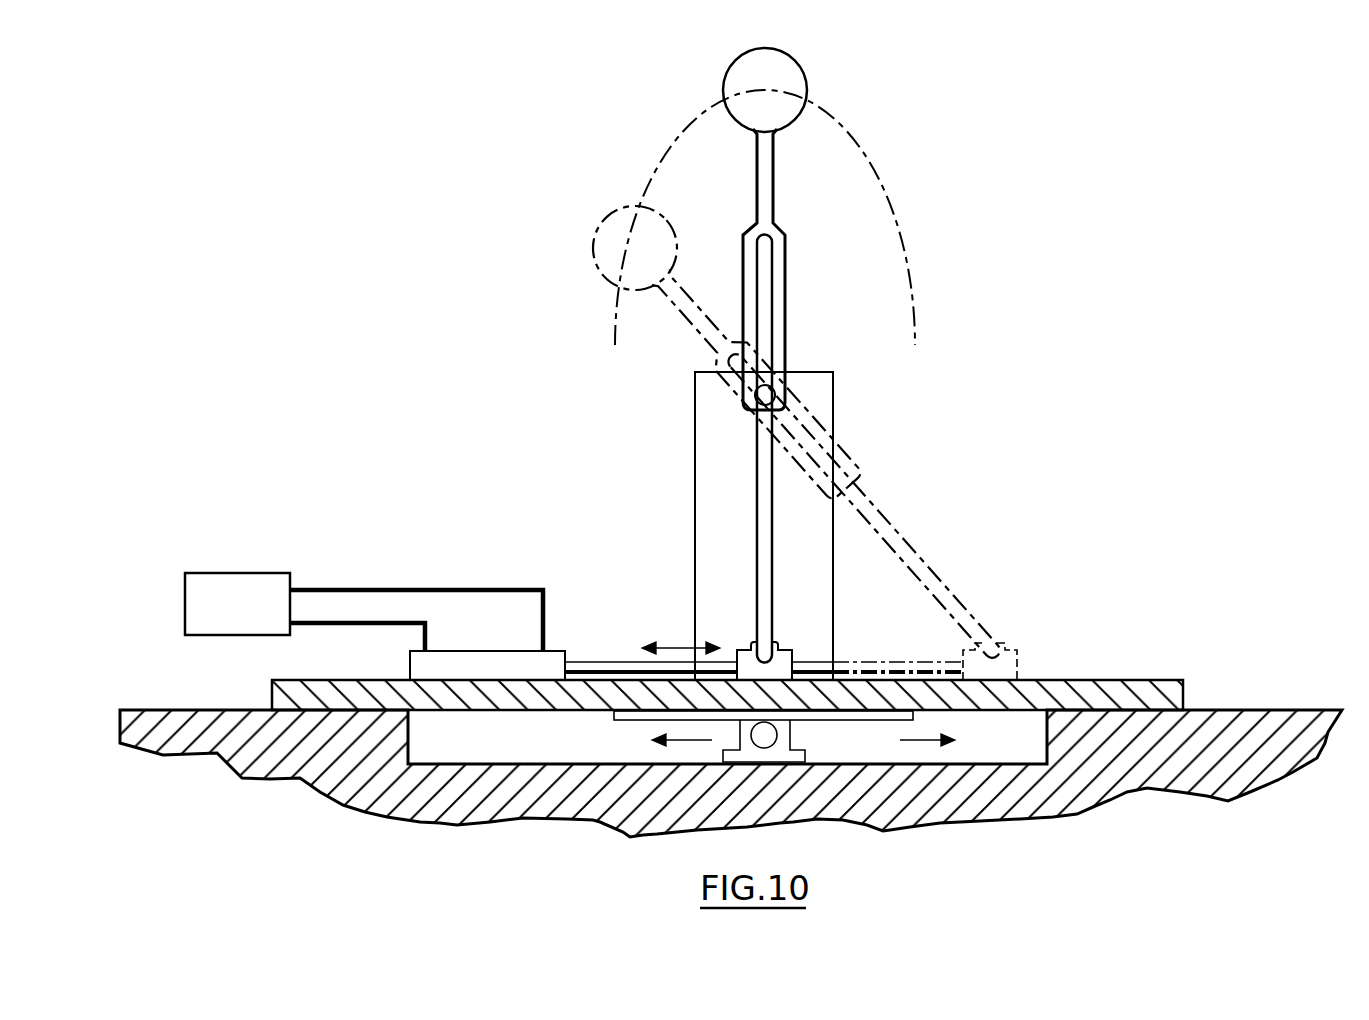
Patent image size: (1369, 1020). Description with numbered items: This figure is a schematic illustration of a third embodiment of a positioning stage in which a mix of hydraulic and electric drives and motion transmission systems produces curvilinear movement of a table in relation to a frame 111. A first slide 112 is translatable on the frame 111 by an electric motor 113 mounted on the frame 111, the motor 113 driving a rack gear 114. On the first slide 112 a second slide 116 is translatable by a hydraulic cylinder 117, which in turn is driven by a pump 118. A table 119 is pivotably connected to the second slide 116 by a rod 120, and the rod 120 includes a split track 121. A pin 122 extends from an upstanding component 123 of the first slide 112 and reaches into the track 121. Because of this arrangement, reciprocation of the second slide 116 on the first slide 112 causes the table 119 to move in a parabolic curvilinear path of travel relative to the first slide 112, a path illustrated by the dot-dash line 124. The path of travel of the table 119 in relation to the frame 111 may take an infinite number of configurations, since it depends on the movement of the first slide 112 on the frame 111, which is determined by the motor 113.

The frame 111 is at (227, 710).
The first slide 112 is at (1090, 680).
The electric motor 113 is at (797, 731).
The rack gear 114 is at (635, 722).
The second slide 116 is at (740, 650).
The hydraulic cylinder 117 is at (530, 657).
The pump 118 is at (232, 573).
The table 119 is at (795, 93).
The rod 120 is at (757, 530).
The split track 121 is at (785, 287).
The pin 122 is at (773, 373).
The upstanding component 123 is at (823, 405).
The dot-dash line 124 is at (667, 152).